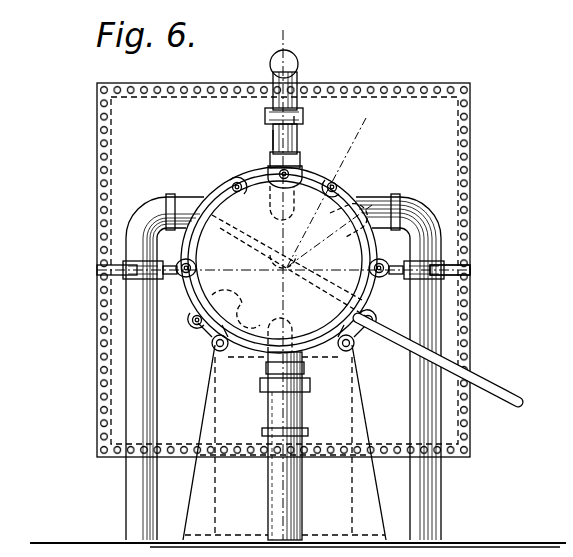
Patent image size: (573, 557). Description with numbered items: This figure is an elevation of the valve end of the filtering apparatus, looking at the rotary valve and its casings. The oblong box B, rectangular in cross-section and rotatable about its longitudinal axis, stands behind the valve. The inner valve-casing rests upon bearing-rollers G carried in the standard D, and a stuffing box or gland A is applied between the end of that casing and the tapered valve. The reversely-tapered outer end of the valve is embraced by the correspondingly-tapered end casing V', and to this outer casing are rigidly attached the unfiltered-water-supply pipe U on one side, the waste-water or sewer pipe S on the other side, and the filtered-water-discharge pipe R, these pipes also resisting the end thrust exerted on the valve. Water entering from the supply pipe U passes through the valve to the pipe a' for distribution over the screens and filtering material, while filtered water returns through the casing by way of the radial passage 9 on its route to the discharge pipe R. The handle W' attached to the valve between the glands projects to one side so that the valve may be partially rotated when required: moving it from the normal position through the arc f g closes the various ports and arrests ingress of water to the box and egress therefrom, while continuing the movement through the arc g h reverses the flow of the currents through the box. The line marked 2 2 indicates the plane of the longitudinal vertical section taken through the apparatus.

The section line 2 is at (284, 97).
The radial passage 9 is at (36, 543).
The stuffing box or gland A is at (343, 200).
The oblong box B is at (284, 270).
The standard D is at (366, 428).
The bearing-rollers G is at (210, 347).
The filtered-water-discharge pipe R is at (300, 352).
The waste-water or sewer pipe S is at (156, 204).
The unfiltered-water-supply pipe U is at (413, 367).
The handle W' is at (438, 360).
The pipe a' is at (252, 139).
The arc point f is at (425, 198).
The arc point g is at (363, 143).
The arc point h is at (297, 133).
The end casing V' is at (333, 174).